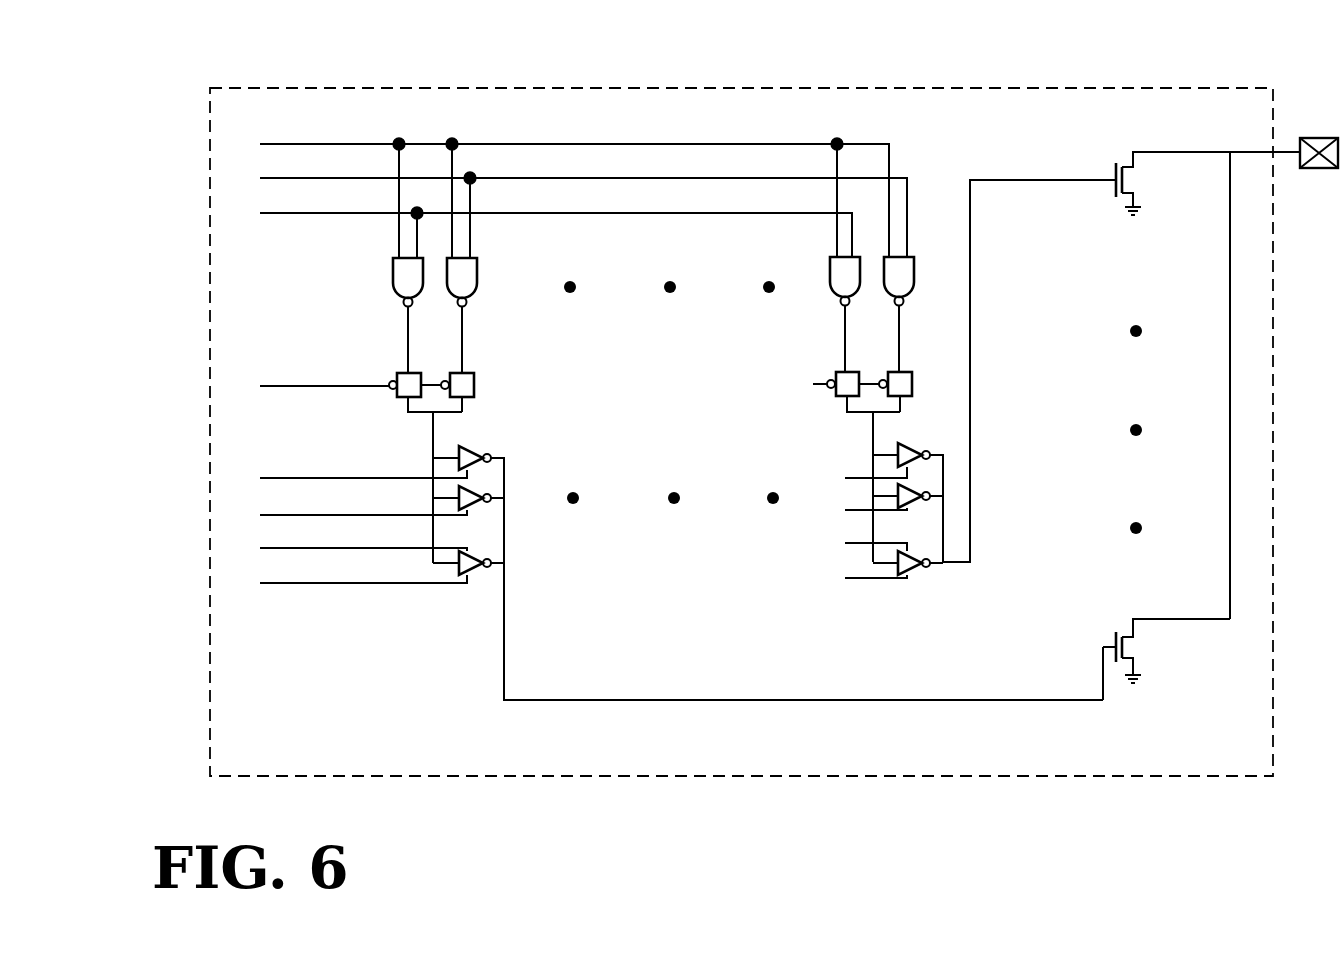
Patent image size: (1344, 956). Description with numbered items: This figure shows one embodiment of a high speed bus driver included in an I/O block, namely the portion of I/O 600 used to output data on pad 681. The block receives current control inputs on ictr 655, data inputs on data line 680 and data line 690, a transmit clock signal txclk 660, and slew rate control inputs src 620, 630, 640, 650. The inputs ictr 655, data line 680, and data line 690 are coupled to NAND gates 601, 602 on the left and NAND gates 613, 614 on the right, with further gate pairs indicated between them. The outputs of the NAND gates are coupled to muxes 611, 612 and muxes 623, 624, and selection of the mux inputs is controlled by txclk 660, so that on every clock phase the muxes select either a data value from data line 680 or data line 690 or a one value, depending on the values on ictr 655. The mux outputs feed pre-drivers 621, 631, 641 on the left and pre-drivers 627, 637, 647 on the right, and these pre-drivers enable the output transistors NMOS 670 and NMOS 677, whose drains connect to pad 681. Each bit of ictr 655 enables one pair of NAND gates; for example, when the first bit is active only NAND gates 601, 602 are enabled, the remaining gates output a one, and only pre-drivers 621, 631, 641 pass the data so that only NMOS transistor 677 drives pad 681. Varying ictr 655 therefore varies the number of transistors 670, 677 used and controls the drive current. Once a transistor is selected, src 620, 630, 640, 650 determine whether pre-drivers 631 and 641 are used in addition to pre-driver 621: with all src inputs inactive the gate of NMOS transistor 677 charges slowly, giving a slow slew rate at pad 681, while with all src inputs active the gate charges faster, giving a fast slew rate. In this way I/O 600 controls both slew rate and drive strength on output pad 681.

The I/O 600 is at (741, 414).
The ictr 655 is at (574, 188).
The data line 680 is at (583, 203).
The data line 690 is at (556, 222).
The NAND gate 601 is at (395, 285).
The NAND gate 602 is at (476, 285).
The mux 611 is at (398, 396).
The mux 612 is at (473, 381).
The txclk 660 is at (324, 372).
The src 620 is at (363, 464).
The src 630 is at (363, 502).
The src 640 is at (363, 537).
The src 650 is at (363, 569).
The pre-driver 621 is at (490, 462).
The pre-driver 631 is at (490, 502).
The pre-driver 641 is at (490, 567).
The NAND gate 613 is at (832, 280).
The NAND gate 614 is at (904, 286).
The mux 623 is at (836, 375).
The mux 624 is at (904, 388).
The pre-driver 627 is at (898, 450).
The pre-driver 637 is at (898, 490).
The pre-driver 647 is at (898, 557).
The NMOS transistor 670 is at (1133, 178).
The NMOS transistor 677 is at (1133, 641).
The pad 681 is at (1322, 152).